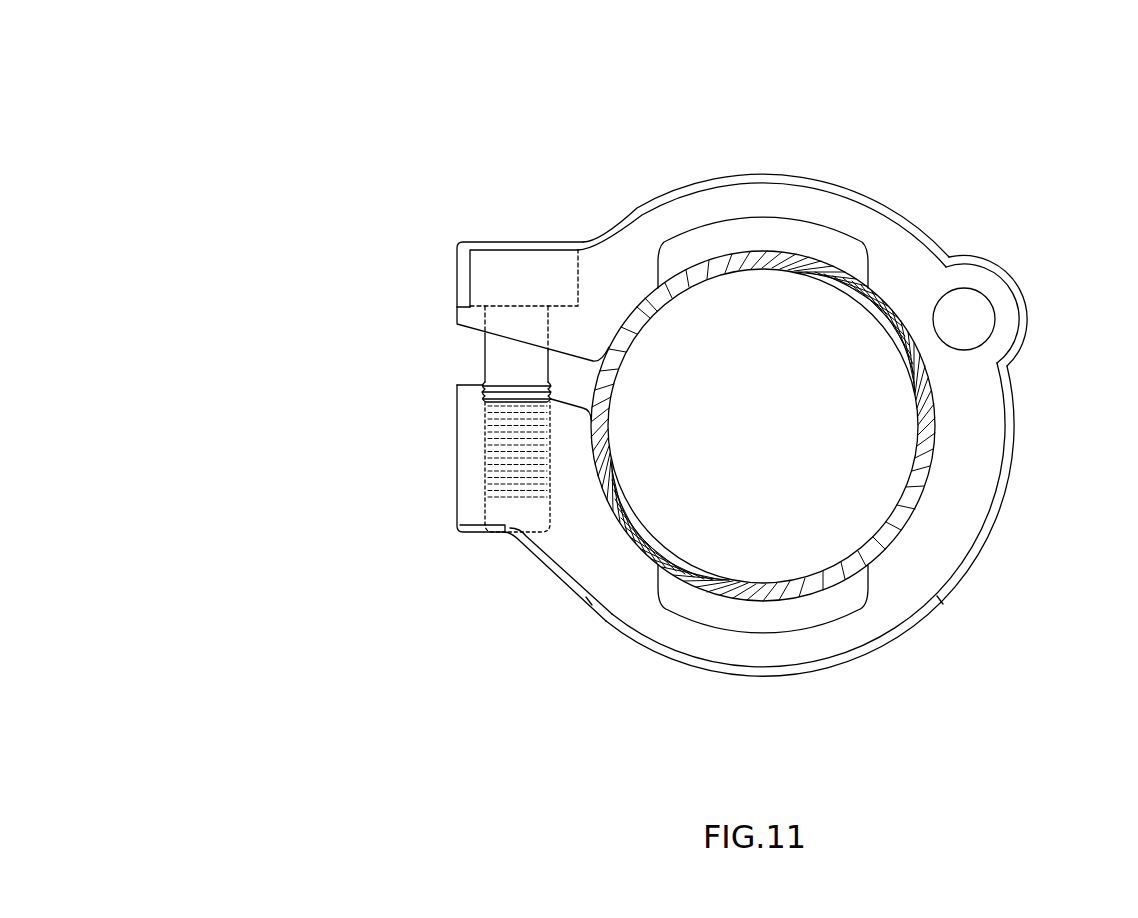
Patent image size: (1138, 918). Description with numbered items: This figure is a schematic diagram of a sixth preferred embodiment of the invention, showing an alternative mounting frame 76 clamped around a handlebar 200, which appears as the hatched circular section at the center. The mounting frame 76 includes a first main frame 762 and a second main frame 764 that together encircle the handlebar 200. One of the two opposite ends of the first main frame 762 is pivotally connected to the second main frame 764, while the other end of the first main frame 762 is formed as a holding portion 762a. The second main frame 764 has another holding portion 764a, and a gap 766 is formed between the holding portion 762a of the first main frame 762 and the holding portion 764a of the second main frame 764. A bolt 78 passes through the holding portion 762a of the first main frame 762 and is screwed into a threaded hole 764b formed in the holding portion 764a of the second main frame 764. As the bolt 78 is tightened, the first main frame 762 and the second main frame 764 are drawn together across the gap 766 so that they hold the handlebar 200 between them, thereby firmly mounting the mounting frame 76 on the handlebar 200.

The mounting frame 76 is at (768, 166).
The first main frame 762 is at (897, 252).
The holding portion 762a is at (479, 318).
The second main frame 764 is at (623, 595).
The holding portion 764a is at (477, 411).
The threaded hole 764b is at (478, 505).
The gap 766 is at (479, 347).
The bolt 78 is at (548, 399).
The handlebar 200 is at (641, 306).